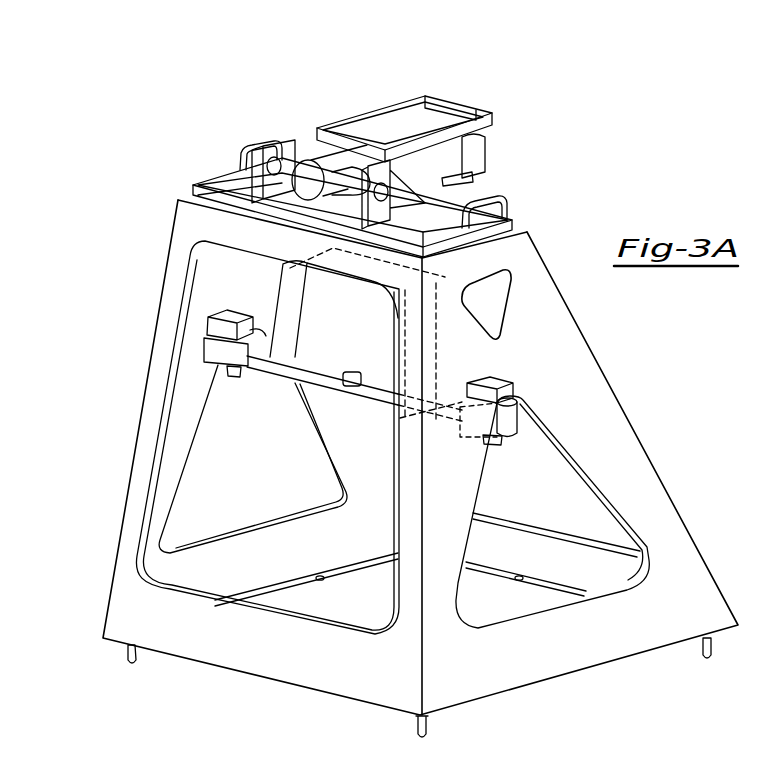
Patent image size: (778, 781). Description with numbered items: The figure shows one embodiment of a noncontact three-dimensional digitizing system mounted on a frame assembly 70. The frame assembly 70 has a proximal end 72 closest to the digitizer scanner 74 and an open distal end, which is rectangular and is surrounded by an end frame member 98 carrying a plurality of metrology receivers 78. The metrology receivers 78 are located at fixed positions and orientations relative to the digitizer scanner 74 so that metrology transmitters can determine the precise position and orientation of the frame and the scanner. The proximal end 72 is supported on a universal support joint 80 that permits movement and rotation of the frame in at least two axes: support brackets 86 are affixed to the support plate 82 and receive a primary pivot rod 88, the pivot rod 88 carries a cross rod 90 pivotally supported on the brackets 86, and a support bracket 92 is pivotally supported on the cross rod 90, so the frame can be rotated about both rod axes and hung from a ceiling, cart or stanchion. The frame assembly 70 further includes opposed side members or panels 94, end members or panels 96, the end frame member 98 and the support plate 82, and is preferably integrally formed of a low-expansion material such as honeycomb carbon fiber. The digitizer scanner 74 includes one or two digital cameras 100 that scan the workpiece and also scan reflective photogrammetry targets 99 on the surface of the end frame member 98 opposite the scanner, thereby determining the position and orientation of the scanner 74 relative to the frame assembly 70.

The frame assembly 70 is at (145, 381).
The proximal end 72 is at (187, 213).
The 3D digitizer scanner 74 is at (252, 300).
The metrology receivers 78 is at (127, 652).
The universal support joint 80 is at (437, 77).
The support plate 82 is at (192, 188).
The support brackets 86 is at (263, 144).
The pivot rod 88 is at (290, 160).
The cross rod 90 is at (352, 162).
The support bracket 92 is at (474, 89).
The side members or panels 94 is at (128, 598).
The end members or panels 96 is at (182, 435).
The end frame member 98 is at (273, 600).
The reflective photogrammetry targets 99 is at (320, 575).
The digital cameras 100 is at (207, 372).